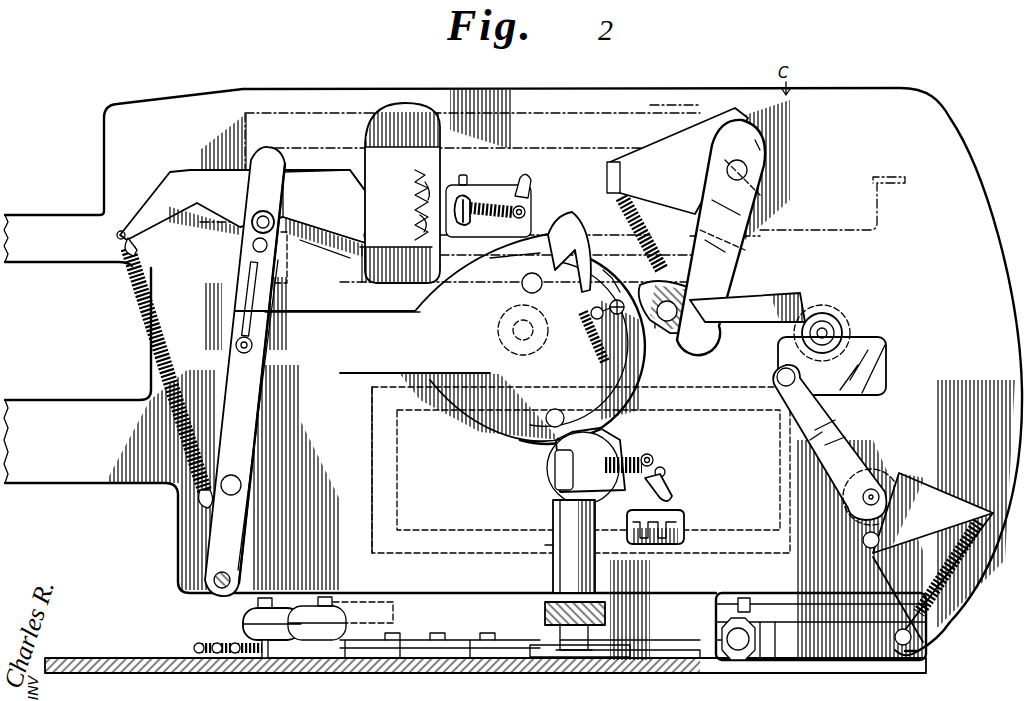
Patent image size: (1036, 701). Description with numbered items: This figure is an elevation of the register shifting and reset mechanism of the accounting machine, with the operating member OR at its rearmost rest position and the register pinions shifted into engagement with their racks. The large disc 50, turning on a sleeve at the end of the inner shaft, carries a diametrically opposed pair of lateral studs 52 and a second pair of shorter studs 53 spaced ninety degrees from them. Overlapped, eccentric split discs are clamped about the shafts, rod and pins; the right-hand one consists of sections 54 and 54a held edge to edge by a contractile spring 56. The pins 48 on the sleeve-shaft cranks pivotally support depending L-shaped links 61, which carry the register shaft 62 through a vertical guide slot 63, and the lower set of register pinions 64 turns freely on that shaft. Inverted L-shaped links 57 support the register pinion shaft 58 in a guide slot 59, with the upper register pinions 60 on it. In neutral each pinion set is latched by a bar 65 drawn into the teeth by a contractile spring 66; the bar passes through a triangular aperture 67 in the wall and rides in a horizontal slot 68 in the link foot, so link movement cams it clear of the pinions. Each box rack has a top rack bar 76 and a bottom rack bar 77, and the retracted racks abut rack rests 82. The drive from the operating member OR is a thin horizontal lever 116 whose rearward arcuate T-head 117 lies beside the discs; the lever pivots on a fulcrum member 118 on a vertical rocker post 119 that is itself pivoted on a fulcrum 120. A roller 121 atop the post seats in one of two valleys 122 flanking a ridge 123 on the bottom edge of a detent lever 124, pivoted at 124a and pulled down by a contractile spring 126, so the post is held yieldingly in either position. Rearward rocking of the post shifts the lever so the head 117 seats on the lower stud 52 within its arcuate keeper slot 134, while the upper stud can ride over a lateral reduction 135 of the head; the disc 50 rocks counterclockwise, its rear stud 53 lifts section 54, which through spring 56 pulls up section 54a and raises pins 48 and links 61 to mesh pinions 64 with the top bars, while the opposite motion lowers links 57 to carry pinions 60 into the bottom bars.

The pins 48 is at (575, 326).
The inner disc 50 is at (450, 300).
The lateral studs 52 is at (528, 280).
The shorter studs 53 is at (688, 332).
The split disc section 54 is at (658, 280).
The split disc section 54a is at (636, 348).
The contractile spring 56 is at (590, 340).
The inverted L-shaped links 57 is at (435, 205).
The register pinion shaft 58 is at (465, 200).
The vertical guide slot 59 is at (463, 175).
The register pinions 60 is at (425, 185).
The depending L-shaped links 61 is at (600, 435).
The register shaft 62 is at (560, 481).
The vertical guide slot 63 is at (558, 500).
The register pinions 64 is at (530, 470).
The latch bar 65 is at (522, 190).
The contractile spring 66 is at (492, 192).
The triangular aperture 67 is at (665, 480).
The horizontal slot 68 is at (665, 470).
The top rack bar 76 is at (405, 110).
The bottom rack bar 77 is at (480, 565).
The rack rests 82 is at (760, 240).
The lever 116 is at (320, 322).
The arcuate T-head 117 is at (569, 310).
The fulcrum member 118 is at (236, 340).
The rocker post 119 is at (250, 412).
The fulcrum 120 is at (262, 478).
The roller 121 is at (275, 210).
The valleys 122 is at (195, 200).
The ridge 123 is at (251, 230).
The detent lever 124 is at (320, 190).
The detent lever pivot 124a is at (336, 250).
The contractile spring 126 is at (142, 305).
The arcuate keeper slot 134 is at (545, 306).
The lateral reduction 135 is at (495, 257).
The operating member OR is at (545, 608).